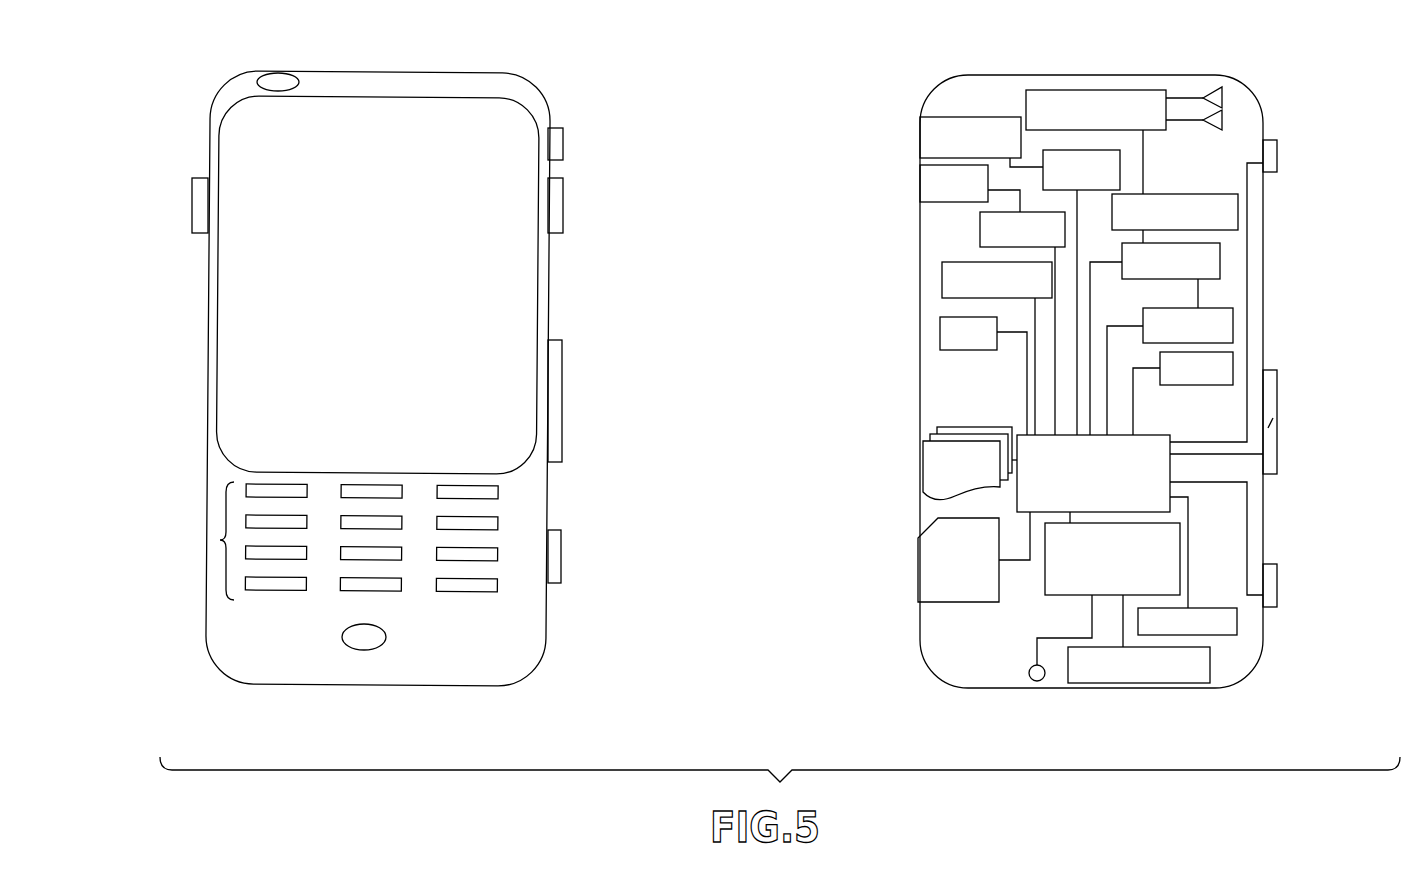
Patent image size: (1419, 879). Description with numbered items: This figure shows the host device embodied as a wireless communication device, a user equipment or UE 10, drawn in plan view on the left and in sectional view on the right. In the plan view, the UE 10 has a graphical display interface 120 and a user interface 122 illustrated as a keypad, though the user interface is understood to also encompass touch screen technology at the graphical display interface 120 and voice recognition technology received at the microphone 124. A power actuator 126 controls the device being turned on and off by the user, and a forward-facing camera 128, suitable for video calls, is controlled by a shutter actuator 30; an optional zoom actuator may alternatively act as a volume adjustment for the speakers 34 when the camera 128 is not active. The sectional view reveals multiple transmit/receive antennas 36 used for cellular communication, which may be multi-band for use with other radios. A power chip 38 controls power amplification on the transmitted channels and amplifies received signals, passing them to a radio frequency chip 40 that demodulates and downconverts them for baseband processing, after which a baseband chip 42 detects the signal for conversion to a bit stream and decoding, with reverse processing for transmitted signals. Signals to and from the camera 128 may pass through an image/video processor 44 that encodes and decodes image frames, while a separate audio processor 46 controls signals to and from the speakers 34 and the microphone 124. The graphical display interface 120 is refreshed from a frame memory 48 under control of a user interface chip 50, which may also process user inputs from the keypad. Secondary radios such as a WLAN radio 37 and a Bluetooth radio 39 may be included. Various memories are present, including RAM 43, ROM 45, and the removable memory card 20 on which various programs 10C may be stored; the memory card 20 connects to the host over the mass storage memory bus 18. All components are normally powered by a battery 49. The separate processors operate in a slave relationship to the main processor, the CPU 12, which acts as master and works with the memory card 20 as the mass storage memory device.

The host device (user equipment) 10 is at (543, 723).
The programs 10C is at (932, 477).
The CPU (main processor) 12 is at (1023, 437).
The mass storage memory bus (MSMB) 18 is at (1012, 563).
The memory card (mass storage memory device) 20 is at (922, 545).
The shutter actuator 30 is at (556, 551).
The speaker 34 is at (193, 181).
The transmit/receive antennas 36 is at (1222, 88).
The WLAN radio 37 is at (945, 290).
The power chip 38 is at (1088, 90).
The Bluetooth radio 39 is at (945, 336).
The radio frequency (RF) chip 40 is at (1228, 222).
The baseband (BB) chip 42 is at (1218, 268).
The random access memory (RAM) 43 is at (1228, 325).
The image/video processor 44 is at (1113, 185).
The read only memory (ROM) 45 is at (1228, 369).
The audio processor 46 is at (979, 232).
The frame memory 48 is at (1137, 683).
The battery 49 is at (1233, 634).
The user interface chip 50 is at (1062, 588).
The graphical display interface 120 is at (237, 303).
The user interface (keypad) 122 is at (224, 540).
The microphone 124 is at (368, 643).
The power actuator 126 is at (560, 141).
The camera 128 is at (285, 74).